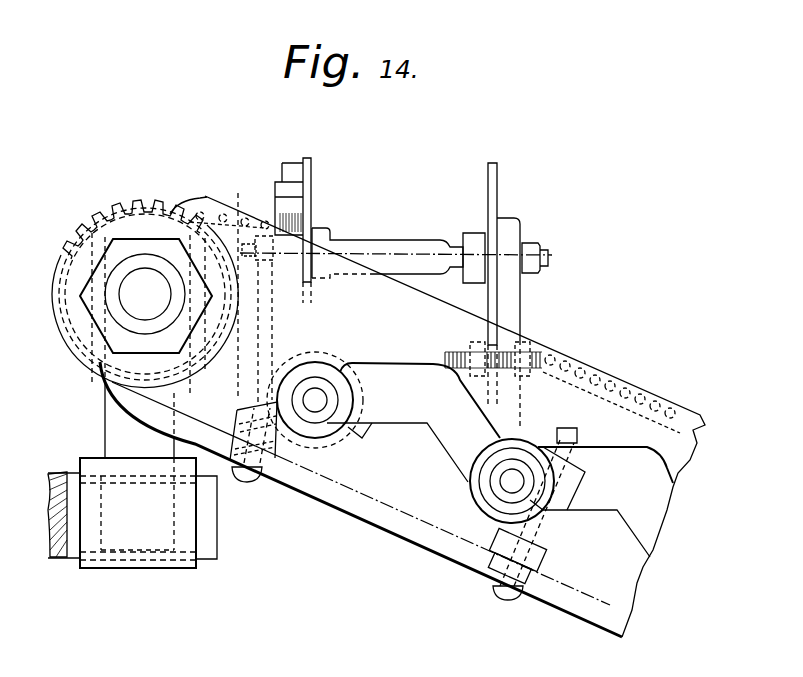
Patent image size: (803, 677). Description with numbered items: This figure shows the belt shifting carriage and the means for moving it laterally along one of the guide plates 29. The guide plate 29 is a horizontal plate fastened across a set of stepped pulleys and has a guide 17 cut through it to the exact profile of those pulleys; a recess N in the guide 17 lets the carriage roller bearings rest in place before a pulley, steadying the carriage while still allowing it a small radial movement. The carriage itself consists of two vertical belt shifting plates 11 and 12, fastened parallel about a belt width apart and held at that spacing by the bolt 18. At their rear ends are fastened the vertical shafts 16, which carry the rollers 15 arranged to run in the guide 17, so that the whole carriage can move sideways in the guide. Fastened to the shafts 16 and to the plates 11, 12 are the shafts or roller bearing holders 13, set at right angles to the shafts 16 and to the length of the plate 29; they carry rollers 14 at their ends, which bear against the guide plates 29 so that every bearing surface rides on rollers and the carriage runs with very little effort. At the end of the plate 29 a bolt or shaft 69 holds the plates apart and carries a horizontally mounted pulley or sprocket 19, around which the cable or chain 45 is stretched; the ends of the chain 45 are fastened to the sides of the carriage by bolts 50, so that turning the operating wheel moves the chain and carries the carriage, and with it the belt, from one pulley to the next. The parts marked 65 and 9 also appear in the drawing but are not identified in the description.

The pulley or sprocket 19 is at (85, 232).
The bolt or shaft 69 is at (146, 296).
The cable or chain 45 is at (205, 212).
The belt shifting plate 12 is at (307, 158).
The bolt 18 is at (393, 240).
The belt shifting plate 11 is at (488, 172).
The bolt 50 is at (317, 230).
The guide 17 is at (405, 365).
The guide plate 29 is at (688, 406).
The roller 15 is at (340, 404).
The vertical shaft 16 is at (503, 486).
The recess N is at (347, 427).
The roller bearing holder shaft 13 is at (257, 398).
The roller 14 is at (273, 470).
The guide block 65 is at (104, 428).
The rod 9 is at (62, 553).